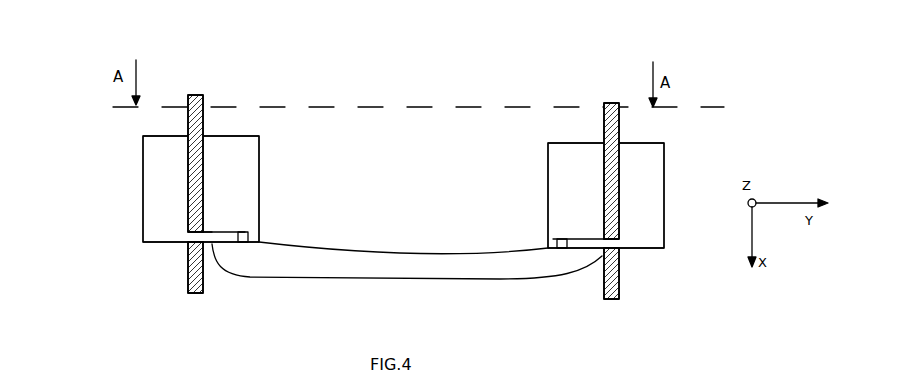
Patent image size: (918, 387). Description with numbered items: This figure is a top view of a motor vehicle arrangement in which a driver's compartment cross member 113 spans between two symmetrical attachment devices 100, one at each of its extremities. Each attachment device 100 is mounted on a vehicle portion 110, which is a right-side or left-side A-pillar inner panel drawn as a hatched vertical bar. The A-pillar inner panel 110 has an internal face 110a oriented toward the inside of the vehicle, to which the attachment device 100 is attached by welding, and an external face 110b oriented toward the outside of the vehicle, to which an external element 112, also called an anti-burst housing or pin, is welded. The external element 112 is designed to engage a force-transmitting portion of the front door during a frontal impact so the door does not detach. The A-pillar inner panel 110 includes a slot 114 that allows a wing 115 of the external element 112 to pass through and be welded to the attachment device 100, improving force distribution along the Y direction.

The attachment device 100 is at (259, 150).
The vehicle portion 110 is at (193, 90).
The internal face 110a is at (203, 118).
The external face 110b is at (188, 267).
The external element 112 is at (163, 187).
The driver's compartment cross member 113 is at (337, 268).
The slot 114 is at (198, 237).
The wing 115 is at (237, 243).